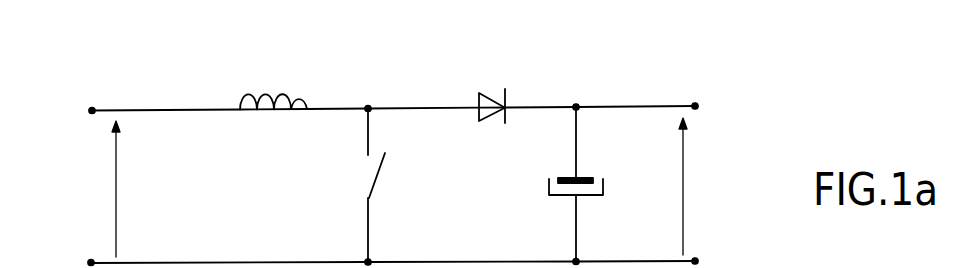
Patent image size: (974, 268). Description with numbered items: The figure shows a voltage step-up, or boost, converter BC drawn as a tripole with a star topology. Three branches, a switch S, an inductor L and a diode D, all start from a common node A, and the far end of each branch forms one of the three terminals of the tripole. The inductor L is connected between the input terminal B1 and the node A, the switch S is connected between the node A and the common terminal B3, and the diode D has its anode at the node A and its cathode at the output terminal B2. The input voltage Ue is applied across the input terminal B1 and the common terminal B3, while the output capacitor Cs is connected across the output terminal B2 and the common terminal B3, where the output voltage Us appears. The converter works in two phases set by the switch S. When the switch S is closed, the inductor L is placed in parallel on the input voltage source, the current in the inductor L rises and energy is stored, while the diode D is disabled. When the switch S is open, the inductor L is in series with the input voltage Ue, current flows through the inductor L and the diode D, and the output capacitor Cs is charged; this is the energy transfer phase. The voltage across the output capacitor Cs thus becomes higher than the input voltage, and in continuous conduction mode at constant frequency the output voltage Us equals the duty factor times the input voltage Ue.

The input terminal B1 is at (96, 107).
The inductor L is at (262, 95).
The common node A is at (368, 105).
The diode D is at (486, 92).
The output terminal B2 is at (577, 101).
The common terminal B3 is at (366, 260).
The voltage step-up converter BC is at (673, 84).
The switch S is at (388, 177).
The output capacitor Cs is at (596, 186).
The input voltage Ue is at (101, 189).
The output voltage Us is at (698, 186).